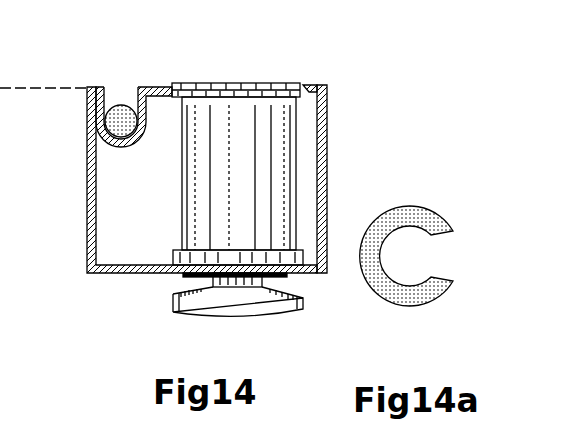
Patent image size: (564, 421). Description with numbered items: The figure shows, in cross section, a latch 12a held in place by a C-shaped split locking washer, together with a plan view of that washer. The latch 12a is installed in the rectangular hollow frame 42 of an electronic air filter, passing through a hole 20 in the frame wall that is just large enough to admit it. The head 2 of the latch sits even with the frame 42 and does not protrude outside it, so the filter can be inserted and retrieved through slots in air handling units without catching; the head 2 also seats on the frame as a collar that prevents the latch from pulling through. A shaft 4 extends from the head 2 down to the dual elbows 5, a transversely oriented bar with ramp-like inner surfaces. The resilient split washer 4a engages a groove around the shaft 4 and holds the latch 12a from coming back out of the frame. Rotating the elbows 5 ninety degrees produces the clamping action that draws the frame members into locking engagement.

In FIG. 14, the head 2 is at (213, 83).
In FIG. 14, the shaft 4 is at (162, 275).
In FIG. 14, the split washer 4a is at (290, 279).
In FIG. 14A, the split washer 4a is at (428, 303).
In FIG. 14, the dual elbows 5 is at (262, 300).
In FIG. 14, the latch 12a is at (243, 122).
In FIG. 14, the hole 20 is at (170, 85).
In FIG. 14, the hollow frame 42 is at (327, 178).